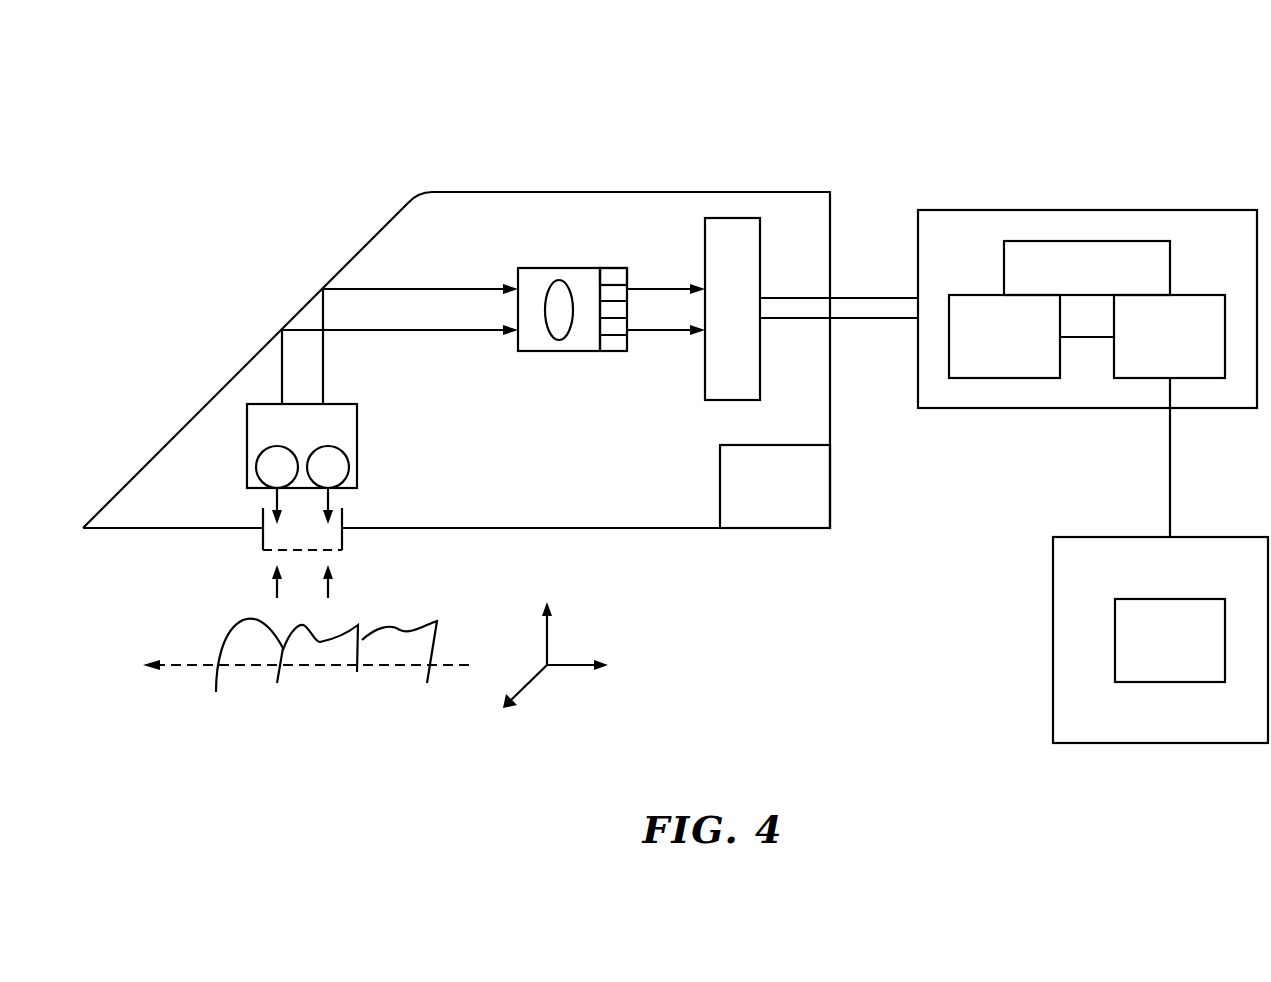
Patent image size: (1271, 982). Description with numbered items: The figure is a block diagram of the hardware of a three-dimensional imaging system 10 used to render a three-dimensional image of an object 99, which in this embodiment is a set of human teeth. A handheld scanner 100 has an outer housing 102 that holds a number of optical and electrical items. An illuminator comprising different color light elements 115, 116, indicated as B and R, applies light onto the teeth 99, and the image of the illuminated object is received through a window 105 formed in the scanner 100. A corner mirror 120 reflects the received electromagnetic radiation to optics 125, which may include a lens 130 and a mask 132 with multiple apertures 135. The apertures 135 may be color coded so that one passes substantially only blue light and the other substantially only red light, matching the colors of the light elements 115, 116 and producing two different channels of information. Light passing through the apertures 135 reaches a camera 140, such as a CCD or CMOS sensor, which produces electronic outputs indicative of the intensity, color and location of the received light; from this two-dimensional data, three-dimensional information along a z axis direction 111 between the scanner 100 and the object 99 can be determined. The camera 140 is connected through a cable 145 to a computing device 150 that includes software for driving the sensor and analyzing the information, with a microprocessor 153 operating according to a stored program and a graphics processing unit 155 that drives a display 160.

The three-dimensional imaging system 10 is at (820, 93).
The object 99 is at (380, 601).
The handheld scanner 100 is at (348, 168).
The outer housing 102 is at (553, 192).
The window 105 is at (263, 540).
The z axis direction 111 is at (547, 637).
The light element 115 is at (350, 467).
The light element 116 is at (256, 470).
The corner mirror 120 is at (300, 308).
The optics 125 is at (545, 358).
The lens 130 is at (556, 282).
The mask 132 is at (609, 358).
The apertures 135 is at (612, 290).
The camera 140 is at (703, 380).
The cable 145 is at (868, 308).
The computing device 150 is at (1045, 210).
The microprocessor 153 is at (1005, 378).
The graphics processing unit 155 is at (1200, 378).
The display 160 is at (1053, 582).